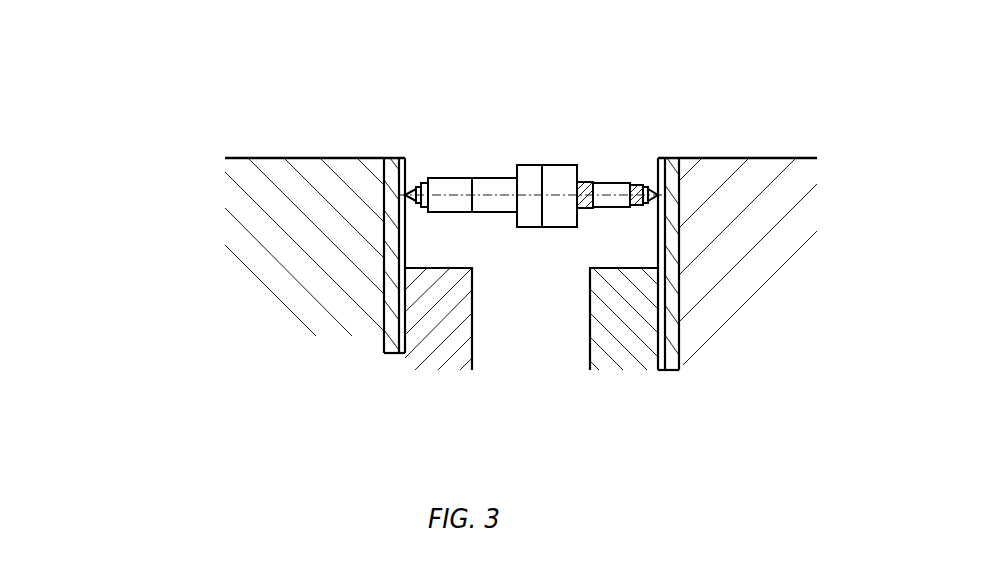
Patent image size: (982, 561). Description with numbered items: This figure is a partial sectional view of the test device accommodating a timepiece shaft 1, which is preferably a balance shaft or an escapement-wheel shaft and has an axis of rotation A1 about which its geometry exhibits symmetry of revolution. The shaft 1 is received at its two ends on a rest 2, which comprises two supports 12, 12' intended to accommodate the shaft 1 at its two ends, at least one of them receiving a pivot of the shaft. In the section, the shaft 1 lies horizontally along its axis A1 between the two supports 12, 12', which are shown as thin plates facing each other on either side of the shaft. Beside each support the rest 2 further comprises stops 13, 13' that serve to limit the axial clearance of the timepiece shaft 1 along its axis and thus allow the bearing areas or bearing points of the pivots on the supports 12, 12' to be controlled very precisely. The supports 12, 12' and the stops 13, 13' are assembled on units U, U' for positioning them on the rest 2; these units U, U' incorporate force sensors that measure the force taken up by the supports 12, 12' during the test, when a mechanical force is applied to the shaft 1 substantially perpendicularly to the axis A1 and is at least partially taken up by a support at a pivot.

The timepiece shaft 1 is at (492, 207).
The rest 2 is at (144, 186).
The support 12 is at (703, 312).
The stop 13 is at (784, 271).
The support 12' is at (374, 311).
The stop 13' is at (297, 297).
The unit U is at (748, 256).
The unit U' is at (300, 245).
The axis of rotation A1 is at (615, 193).